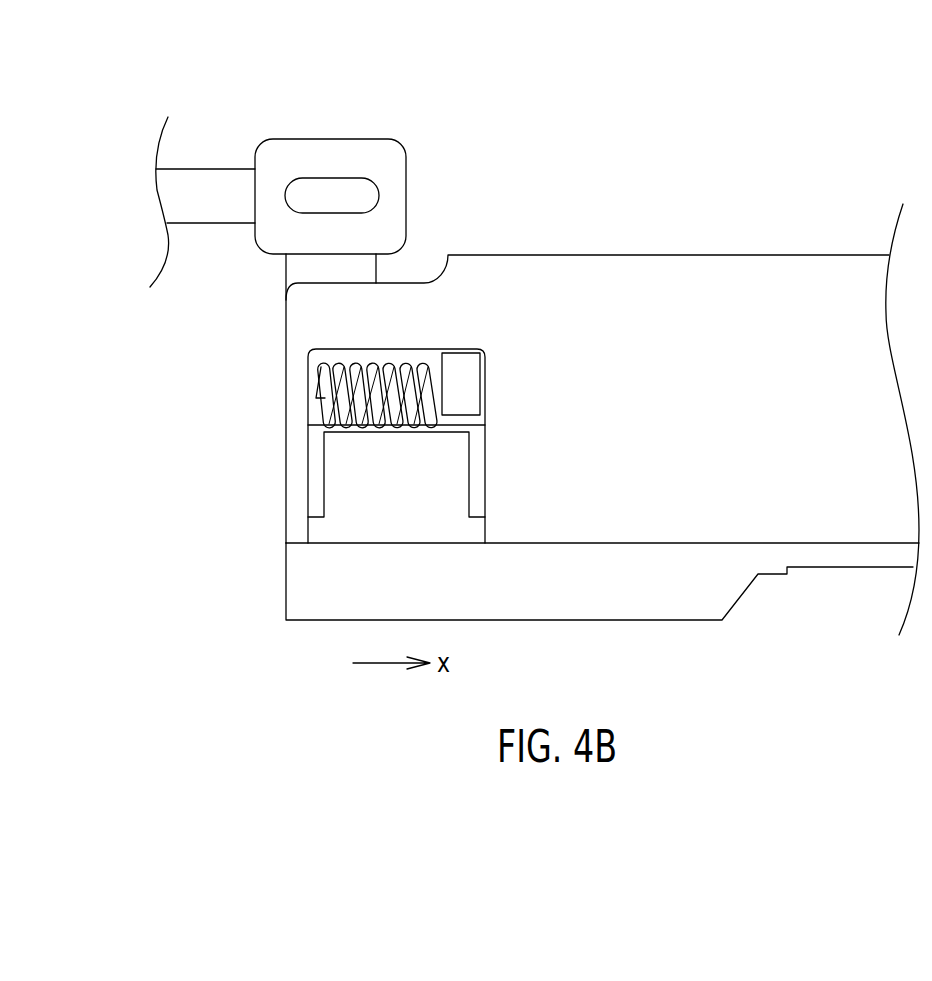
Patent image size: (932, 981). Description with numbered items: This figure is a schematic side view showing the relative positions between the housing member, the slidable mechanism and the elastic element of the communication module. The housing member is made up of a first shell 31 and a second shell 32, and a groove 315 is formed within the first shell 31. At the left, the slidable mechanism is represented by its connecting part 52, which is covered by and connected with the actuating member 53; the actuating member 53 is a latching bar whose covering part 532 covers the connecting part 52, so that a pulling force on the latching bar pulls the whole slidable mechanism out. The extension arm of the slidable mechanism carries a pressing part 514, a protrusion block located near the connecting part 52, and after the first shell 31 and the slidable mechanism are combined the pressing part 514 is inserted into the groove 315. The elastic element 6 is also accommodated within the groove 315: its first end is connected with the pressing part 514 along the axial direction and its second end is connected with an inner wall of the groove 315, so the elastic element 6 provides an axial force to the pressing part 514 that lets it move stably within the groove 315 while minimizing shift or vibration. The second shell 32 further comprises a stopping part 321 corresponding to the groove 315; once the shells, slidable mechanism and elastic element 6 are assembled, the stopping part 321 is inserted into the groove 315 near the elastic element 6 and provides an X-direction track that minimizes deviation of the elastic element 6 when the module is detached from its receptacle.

The actuating member 53 is at (205, 182).
The covering part 532 is at (327, 155).
The connecting part 52 is at (362, 195).
The first shell 31 is at (708, 277).
The groove 315 is at (322, 353).
The elastic element 6 is at (332, 407).
The pressing part 514 is at (459, 368).
The stopping part 321 is at (345, 464).
The second shell 32 is at (715, 593).